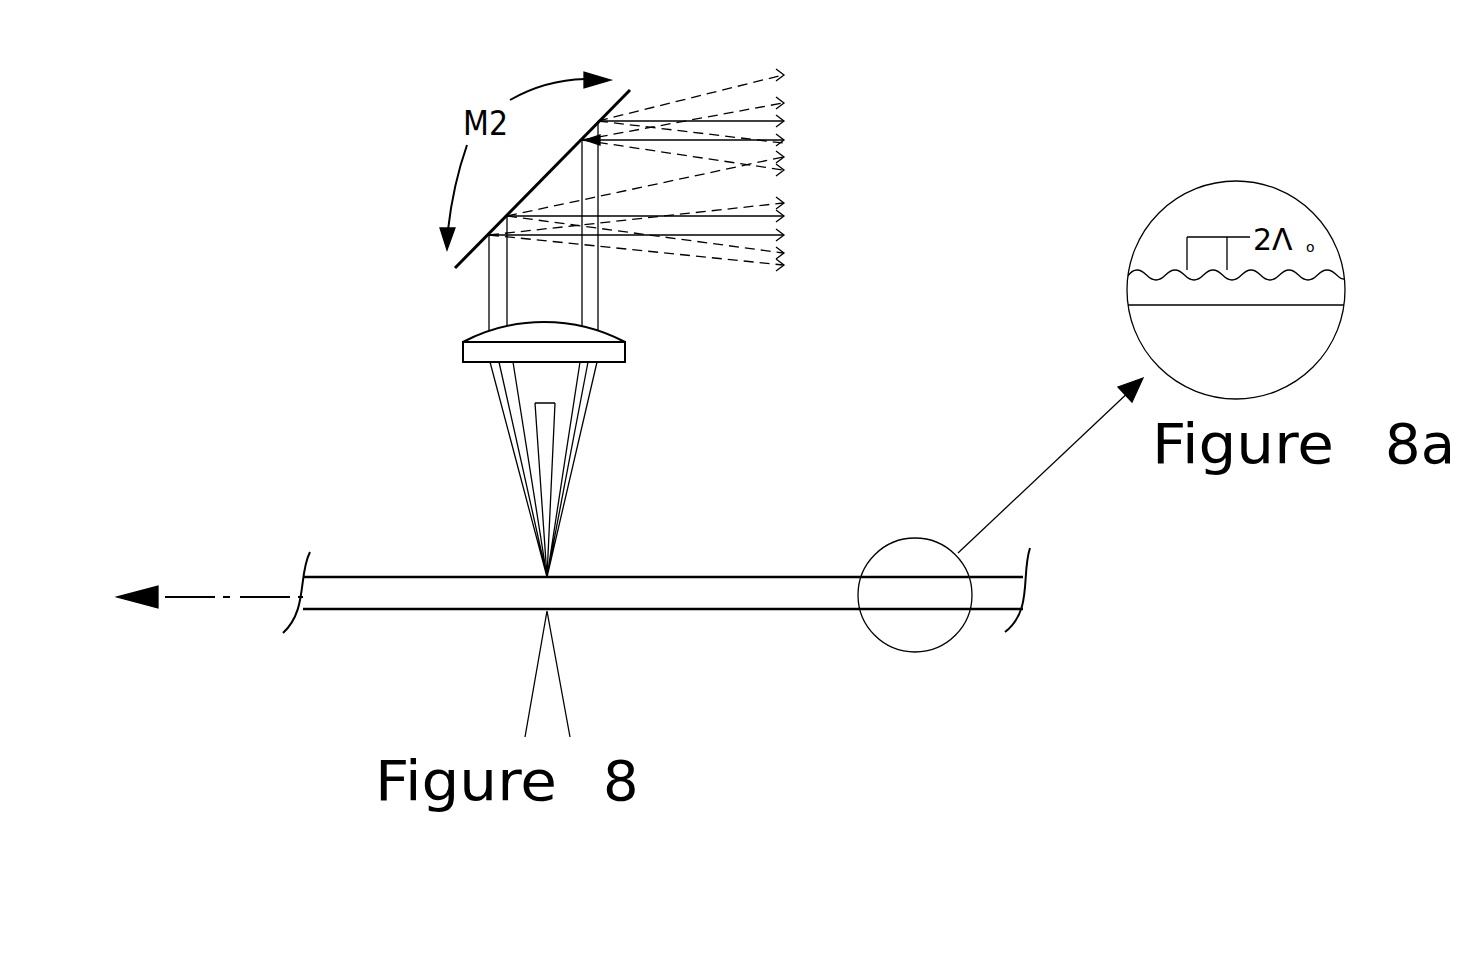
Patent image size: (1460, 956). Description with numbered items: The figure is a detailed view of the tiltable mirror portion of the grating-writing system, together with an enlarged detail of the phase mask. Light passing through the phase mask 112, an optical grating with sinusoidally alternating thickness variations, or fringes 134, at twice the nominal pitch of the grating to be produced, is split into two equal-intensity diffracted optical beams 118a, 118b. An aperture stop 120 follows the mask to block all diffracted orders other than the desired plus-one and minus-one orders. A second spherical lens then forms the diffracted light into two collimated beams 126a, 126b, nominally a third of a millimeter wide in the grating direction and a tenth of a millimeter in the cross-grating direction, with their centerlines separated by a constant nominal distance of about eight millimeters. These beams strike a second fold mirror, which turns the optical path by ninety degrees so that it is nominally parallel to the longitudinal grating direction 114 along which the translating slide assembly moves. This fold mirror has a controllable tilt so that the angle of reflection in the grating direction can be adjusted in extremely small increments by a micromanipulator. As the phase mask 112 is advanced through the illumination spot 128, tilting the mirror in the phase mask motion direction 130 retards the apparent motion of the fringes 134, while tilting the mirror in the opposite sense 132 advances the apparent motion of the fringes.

In FIG. 8, the phase mask 112 is at (458, 578).
In FIG. 8, the longitudinal (grating) direction 114 is at (178, 597).
In FIG. 8, the first diffracted optical beam 118a is at (505, 417).
In FIG. 8, the second diffracted optical beam 118b is at (587, 423).
In FIG. 8, the aperture stop 120 is at (555, 403).
In FIG. 8, the first collimated beam 126a is at (490, 288).
In FIG. 8, the second collimated beam 126b is at (783, 147).
In FIG. 8, the illumination spot 128 is at (545, 615).
In FIG. 8, the phase mask motion direction 130 is at (558, 80).
In FIG. 8, the tilt opposite to motion direction 132 is at (448, 185).
In FIG. 8A, the phase mask fringes 134 is at (1148, 270).